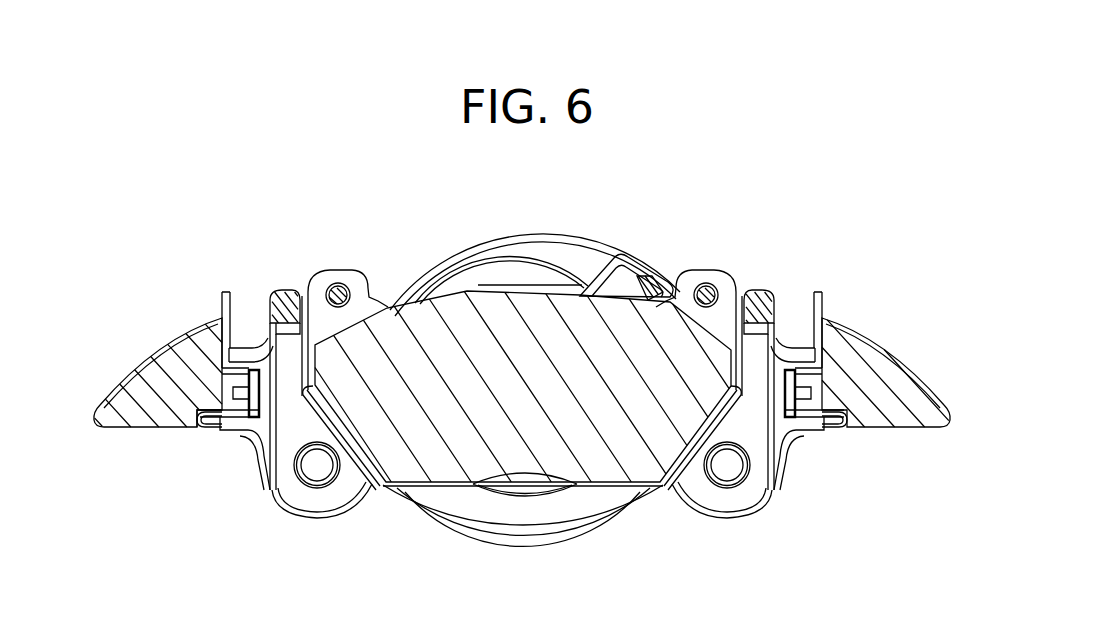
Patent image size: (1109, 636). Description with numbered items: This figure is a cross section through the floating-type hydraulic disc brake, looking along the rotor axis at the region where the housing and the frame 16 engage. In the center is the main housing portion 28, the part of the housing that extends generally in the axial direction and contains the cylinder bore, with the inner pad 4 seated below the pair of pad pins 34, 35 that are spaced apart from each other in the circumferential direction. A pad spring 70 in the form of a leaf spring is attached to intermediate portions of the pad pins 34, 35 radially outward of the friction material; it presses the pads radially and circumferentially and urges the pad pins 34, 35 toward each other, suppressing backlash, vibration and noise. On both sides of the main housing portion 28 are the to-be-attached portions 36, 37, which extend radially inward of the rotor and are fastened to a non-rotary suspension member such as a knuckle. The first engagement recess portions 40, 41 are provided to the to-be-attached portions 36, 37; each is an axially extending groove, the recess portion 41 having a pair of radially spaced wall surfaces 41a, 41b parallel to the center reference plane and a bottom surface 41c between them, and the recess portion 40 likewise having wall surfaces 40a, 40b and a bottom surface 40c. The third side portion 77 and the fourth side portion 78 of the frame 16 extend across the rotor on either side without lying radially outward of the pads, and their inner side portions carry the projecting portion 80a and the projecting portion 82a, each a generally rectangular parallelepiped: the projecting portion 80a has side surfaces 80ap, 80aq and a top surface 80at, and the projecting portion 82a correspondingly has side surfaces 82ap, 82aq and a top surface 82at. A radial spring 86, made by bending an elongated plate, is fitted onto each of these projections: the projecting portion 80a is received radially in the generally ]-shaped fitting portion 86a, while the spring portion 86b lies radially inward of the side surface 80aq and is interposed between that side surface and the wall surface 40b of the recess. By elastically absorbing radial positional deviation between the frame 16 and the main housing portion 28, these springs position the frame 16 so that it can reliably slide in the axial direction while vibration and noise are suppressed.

The inner pad 4 is at (331, 258).
The frame 16 is at (859, 304).
The main housing portion 28 is at (567, 253).
The pad pin 34 is at (327, 288).
The pad pin 35 is at (712, 285).
The to-be-attached portion 36 is at (349, 494).
The to-be-attached portion 37 is at (698, 495).
The first engagement recess portion 40 is at (247, 455).
The wall surface 40a is at (257, 370).
The wall surface 40b is at (264, 423).
The bottom surface 40c is at (220, 370).
The first engagement recess portion 41 is at (802, 452).
The wall surface 41a is at (787, 370).
The wall surface 41b is at (775, 423).
The bottom surface 41c is at (824, 370).
The pad spring 70 is at (640, 253).
The third side portion 77 is at (123, 390).
The fourth side portion 78 is at (872, 390).
The projecting portion 80a is at (246, 333).
The side surface 80ap is at (233, 347).
The side surface 80aq is at (227, 432).
The top surface 80at is at (270, 397).
The projecting portion 82a is at (798, 333).
The side surface 82ap is at (812, 347).
The side surface 82aq is at (817, 432).
The top surface 82at is at (731, 488).
The radial spring 86 is at (189, 434).
The fitting portion 86a is at (381, 489).
The spring portion 86b is at (197, 446).